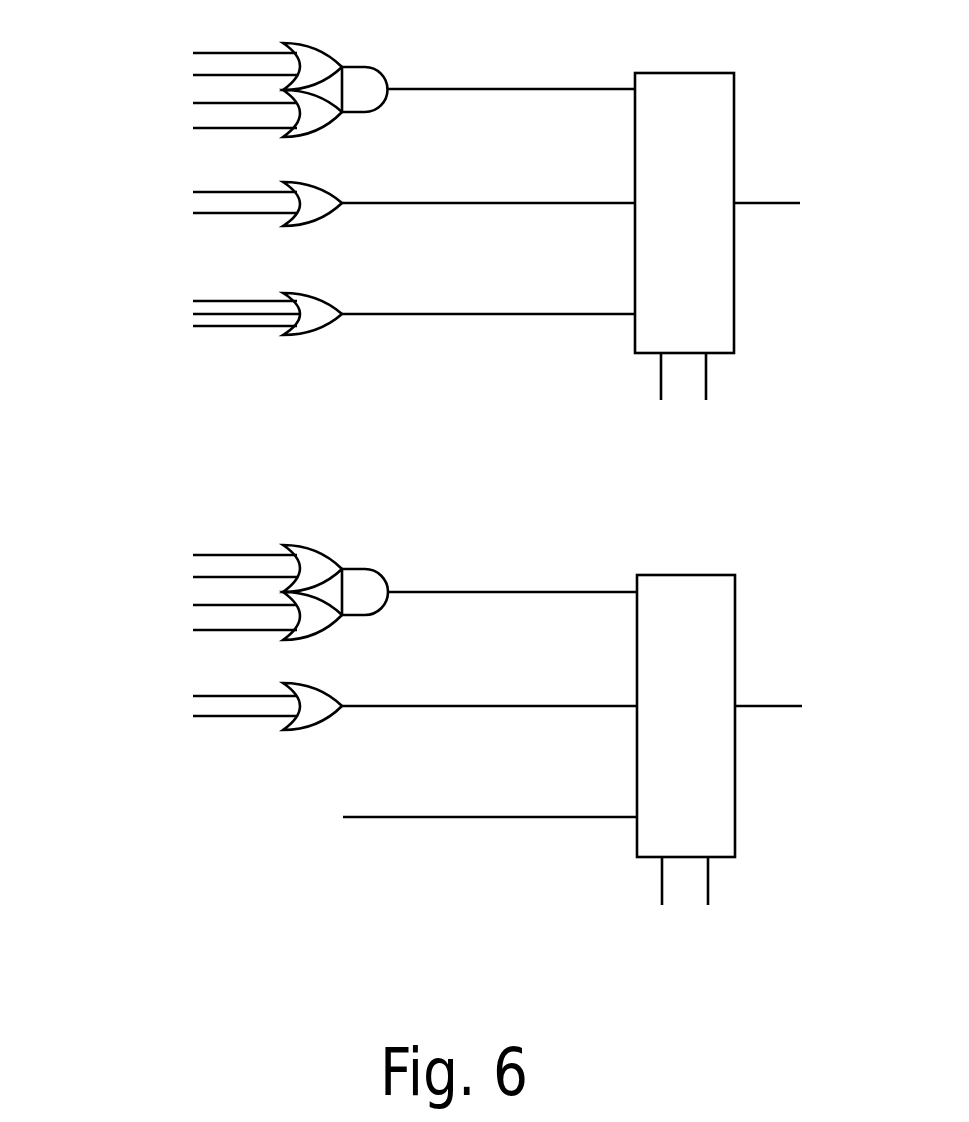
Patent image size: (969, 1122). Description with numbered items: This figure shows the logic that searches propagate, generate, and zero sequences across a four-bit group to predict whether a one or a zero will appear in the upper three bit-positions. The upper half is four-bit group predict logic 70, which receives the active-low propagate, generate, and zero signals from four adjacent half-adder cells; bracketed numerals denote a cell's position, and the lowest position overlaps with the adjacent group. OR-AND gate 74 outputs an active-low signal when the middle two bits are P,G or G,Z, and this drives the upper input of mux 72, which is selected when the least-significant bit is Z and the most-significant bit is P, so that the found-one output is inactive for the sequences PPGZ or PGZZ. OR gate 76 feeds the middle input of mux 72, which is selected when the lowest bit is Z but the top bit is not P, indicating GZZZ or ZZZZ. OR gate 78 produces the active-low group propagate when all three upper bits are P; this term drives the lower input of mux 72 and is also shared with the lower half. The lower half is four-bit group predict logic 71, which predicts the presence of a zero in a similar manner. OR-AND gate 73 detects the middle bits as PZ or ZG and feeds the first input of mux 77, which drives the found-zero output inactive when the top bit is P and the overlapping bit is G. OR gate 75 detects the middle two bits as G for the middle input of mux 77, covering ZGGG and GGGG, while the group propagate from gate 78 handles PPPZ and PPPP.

The four-bit group predict logic 70 is at (285, 390).
The four-bit group predict logic 71 is at (285, 892).
The mux 72 is at (734, 97).
The OR-AND gate 73 is at (345, 568).
The OR-AND gate 74 is at (345, 65).
The OR gate 75 is at (328, 688).
The OR gate 76 is at (328, 185).
The mux 77 is at (735, 600).
The OR gate 78 is at (325, 294).